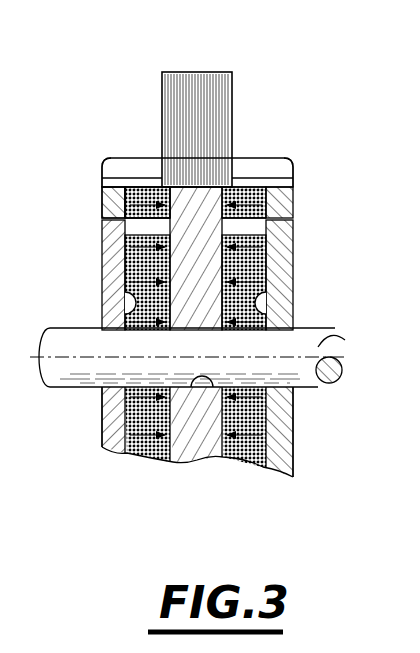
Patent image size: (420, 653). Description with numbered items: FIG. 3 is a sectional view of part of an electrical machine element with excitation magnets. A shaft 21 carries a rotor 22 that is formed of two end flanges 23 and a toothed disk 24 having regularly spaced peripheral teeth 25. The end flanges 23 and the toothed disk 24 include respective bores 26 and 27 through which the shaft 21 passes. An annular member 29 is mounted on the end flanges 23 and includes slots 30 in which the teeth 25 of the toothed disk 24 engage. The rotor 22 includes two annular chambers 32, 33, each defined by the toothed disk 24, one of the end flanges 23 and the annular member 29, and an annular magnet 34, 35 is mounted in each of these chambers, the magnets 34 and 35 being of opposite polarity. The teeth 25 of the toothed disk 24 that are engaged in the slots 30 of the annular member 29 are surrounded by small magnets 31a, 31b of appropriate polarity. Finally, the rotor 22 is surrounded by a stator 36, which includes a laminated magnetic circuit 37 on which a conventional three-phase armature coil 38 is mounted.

The shaft 21 is at (345, 340).
The rotor 22 is at (209, 340).
The end flanges 23 is at (115, 258).
The toothed disk 24 is at (280, 248).
The peripheral teeth 25 is at (200, 275).
The bores 26 is at (105, 428).
The bore 27 is at (199, 384).
The annular member 29 is at (98, 208).
The slots 30 is at (140, 190).
The small magnet 31a is at (103, 181).
The small magnet 31b is at (292, 188).
The annular chamber 32 is at (120, 296).
The annular chamber 33 is at (280, 300).
The annular magnet 34 is at (150, 445).
The annular magnet 35 is at (252, 448).
The stator 36 is at (240, 110).
The laminated magnetic circuit 37 is at (188, 88).
The three-phase armature coil 38 is at (290, 165).